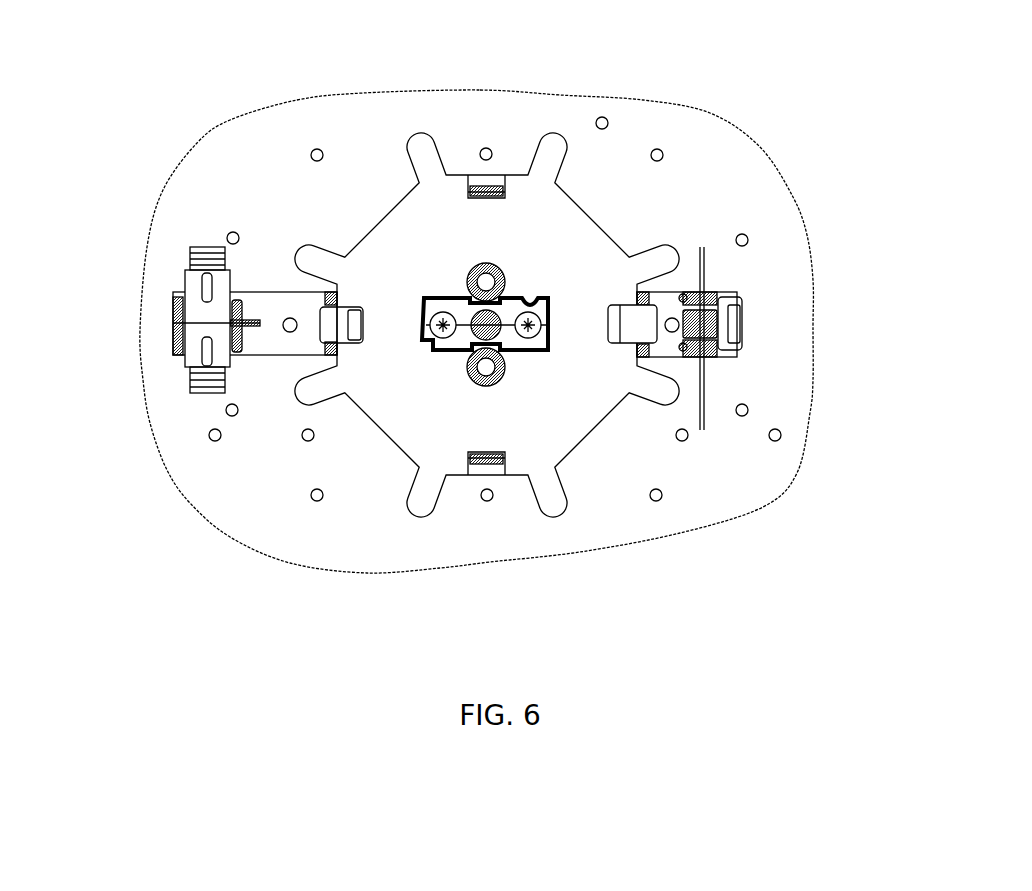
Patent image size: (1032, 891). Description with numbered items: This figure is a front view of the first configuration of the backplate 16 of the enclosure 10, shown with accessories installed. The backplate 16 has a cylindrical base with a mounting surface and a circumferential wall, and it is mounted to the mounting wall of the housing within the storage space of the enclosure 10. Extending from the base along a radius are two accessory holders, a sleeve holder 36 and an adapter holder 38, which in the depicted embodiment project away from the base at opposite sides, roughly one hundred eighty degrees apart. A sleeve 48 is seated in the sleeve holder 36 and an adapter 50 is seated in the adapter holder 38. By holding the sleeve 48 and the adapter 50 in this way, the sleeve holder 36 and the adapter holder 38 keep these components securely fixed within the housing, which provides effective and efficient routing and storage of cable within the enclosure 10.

The enclosure 10 is at (147, 82).
The backplate 16 is at (560, 253).
The sleeve holder 36 is at (716, 298).
The adapter holder 38 is at (282, 302).
The sleeve 48 is at (701, 367).
The adapter 50 is at (192, 302).